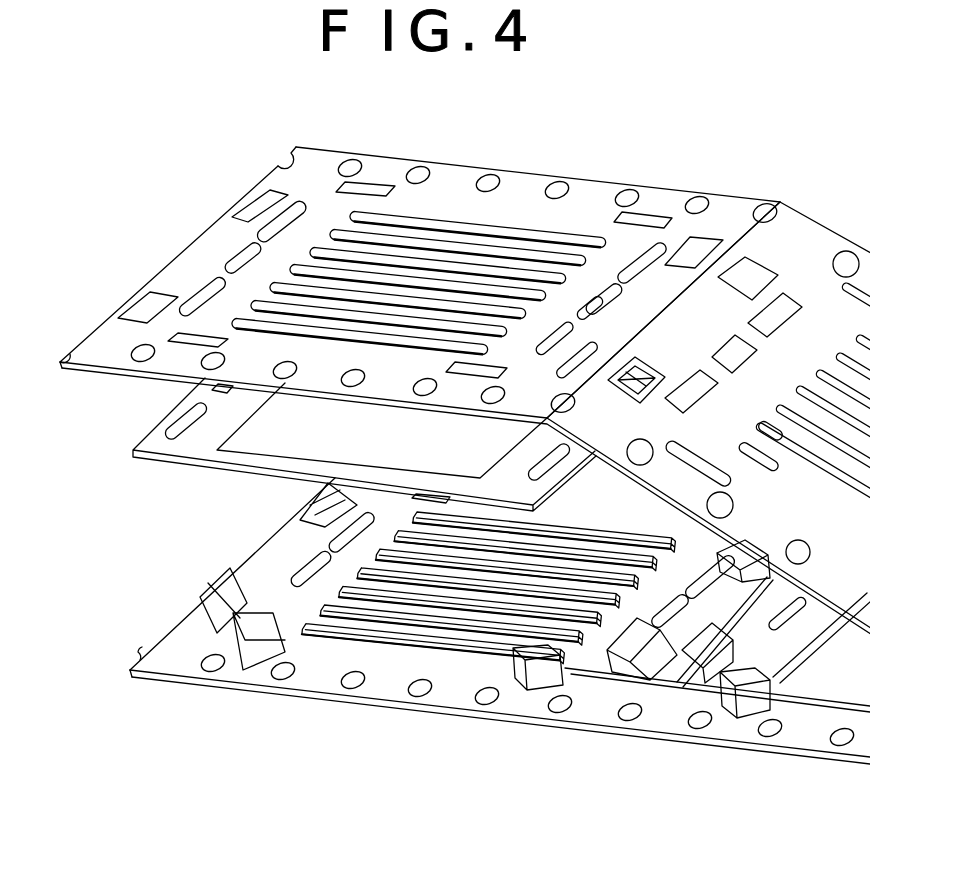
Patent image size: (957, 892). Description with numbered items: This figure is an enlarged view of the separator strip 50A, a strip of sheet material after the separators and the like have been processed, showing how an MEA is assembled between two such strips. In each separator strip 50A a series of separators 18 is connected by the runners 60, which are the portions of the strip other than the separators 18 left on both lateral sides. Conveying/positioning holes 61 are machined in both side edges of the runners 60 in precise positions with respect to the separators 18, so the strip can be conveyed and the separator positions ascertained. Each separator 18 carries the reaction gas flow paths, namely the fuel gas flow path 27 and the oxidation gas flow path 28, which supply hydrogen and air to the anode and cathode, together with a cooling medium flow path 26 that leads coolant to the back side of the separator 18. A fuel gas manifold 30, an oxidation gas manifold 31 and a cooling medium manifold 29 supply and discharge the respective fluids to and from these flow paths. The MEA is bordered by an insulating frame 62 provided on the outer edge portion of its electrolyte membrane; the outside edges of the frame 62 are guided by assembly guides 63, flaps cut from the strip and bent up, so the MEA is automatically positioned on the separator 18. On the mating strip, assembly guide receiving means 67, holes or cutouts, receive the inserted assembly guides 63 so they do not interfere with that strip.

The separator 18 is at (426, 262).
The fuel gas flow path 27 is at (472, 223).
The cooling medium flow path 26 is at (418, 283).
The oxidation gas flow path 28 is at (418, 283).
The cooling medium manifold 29 is at (303, 205).
The fuel gas manifold 30 is at (238, 262).
The oxidation gas manifold 31 is at (205, 290).
The assembly guide receiving means 67 is at (190, 343).
The runner 60 is at (547, 180).
The conveying/positioning hole 61 is at (623, 200).
The frame 62 is at (180, 455).
The element MEA is at (290, 430).
The assembly guide 63 is at (240, 632).
The separator strip 50A is at (813, 224).